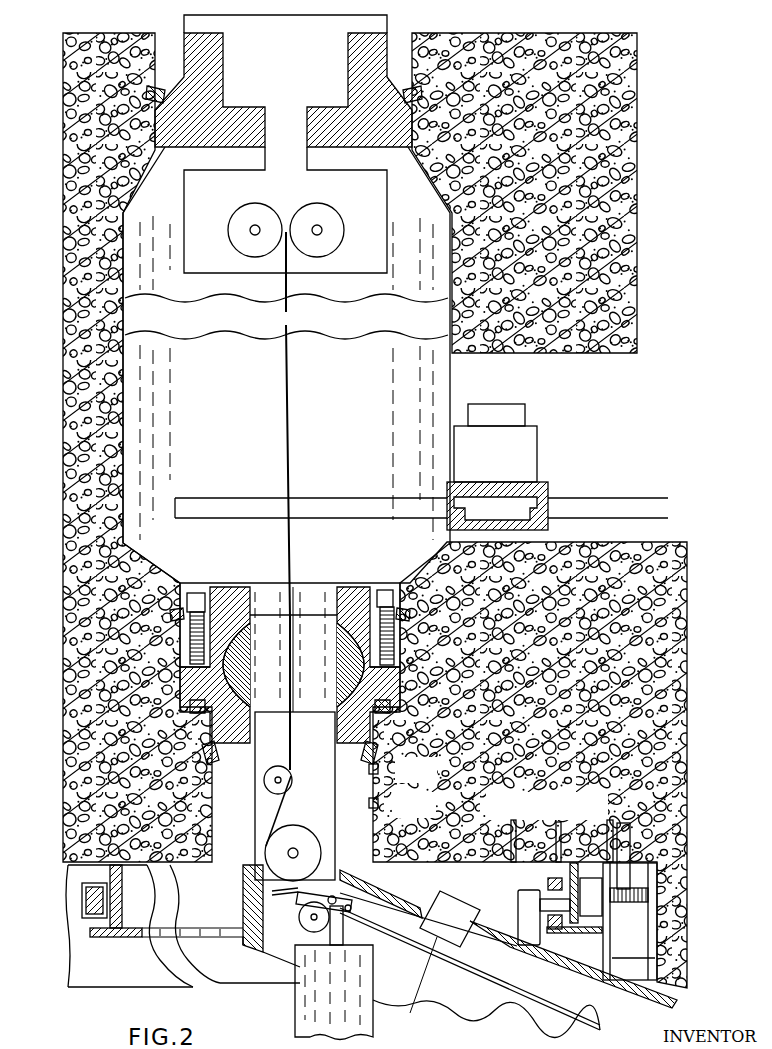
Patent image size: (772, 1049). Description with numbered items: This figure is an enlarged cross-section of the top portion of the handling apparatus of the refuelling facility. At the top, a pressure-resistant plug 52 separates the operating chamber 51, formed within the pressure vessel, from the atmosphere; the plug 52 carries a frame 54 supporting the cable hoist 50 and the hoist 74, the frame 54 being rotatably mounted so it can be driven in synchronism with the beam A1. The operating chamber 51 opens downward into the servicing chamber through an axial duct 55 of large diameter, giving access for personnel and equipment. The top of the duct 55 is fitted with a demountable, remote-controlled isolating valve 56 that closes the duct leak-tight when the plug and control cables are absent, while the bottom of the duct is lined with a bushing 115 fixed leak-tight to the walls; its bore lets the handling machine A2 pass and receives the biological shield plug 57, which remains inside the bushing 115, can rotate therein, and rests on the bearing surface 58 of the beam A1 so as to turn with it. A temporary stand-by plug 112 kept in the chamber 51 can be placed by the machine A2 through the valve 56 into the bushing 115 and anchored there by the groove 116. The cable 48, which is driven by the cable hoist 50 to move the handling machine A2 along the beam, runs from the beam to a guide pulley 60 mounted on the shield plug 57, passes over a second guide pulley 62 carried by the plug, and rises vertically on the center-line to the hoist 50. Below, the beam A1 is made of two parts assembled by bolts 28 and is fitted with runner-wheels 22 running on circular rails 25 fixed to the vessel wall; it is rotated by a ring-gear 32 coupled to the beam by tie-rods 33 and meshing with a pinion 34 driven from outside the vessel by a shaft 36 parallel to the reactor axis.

The pressure-resistant plug 52 is at (243, 120).
The hoist 74 is at (241, 212).
The cable hoist 50 is at (337, 212).
The frame 54 is at (220, 262).
The operating chamber 51 is at (322, 418).
The temporary stand-by plug 112 is at (482, 459).
The axial duct 55 is at (190, 595).
The isolating valve 56 is at (253, 637).
The biological shield plug 57 is at (324, 742).
The second guide pulley 62 is at (278, 766).
The cable 48 is at (290, 806).
The guide pulley 60 is at (313, 838).
The groove 116 is at (380, 770).
The bushing 115 is at (380, 804).
The bearing surface 58 is at (311, 916).
The handling machine A2 is at (284, 1015).
The bolts 28 is at (437, 897).
The beam A1 is at (470, 1003).
The runner-wheel 22 is at (517, 836).
The circular rail 25 is at (557, 840).
The shaft 36 is at (604, 832).
The ring-gear 32 is at (657, 910).
The pinion 34 is at (640, 882).
The tie-rods 33 is at (657, 958).